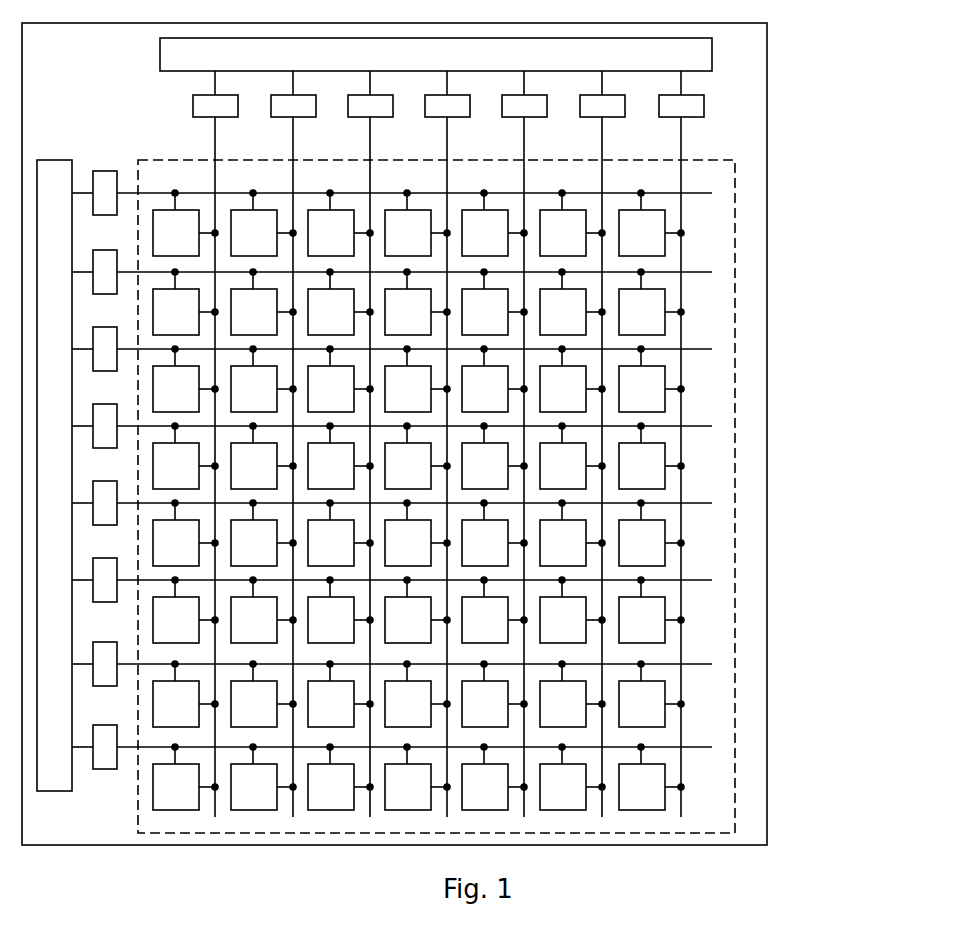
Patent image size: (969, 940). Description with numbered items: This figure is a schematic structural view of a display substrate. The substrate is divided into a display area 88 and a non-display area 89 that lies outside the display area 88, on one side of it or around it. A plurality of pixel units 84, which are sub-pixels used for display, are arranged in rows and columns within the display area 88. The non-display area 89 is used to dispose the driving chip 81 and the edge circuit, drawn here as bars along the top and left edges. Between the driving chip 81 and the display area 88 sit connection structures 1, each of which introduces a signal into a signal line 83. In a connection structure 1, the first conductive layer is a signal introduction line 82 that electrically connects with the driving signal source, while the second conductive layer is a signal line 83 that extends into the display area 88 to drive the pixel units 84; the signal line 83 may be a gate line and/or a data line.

The connection structure 1 is at (100, 170).
The driving chip 81 is at (60, 177).
The signal introduction line 82 is at (484, 398).
The signal line 83 is at (680, 292).
The pixel unit 84 is at (657, 250).
The display area 88 is at (735, 468).
The non-display area 89 is at (755, 603).